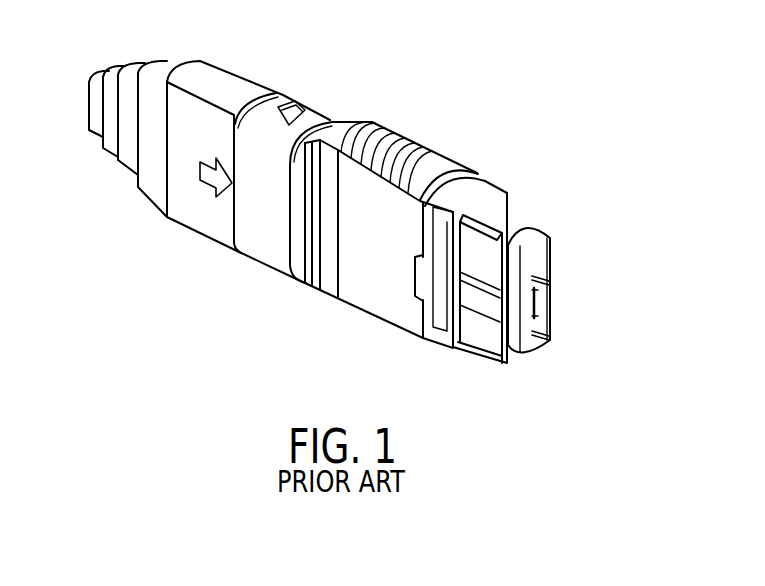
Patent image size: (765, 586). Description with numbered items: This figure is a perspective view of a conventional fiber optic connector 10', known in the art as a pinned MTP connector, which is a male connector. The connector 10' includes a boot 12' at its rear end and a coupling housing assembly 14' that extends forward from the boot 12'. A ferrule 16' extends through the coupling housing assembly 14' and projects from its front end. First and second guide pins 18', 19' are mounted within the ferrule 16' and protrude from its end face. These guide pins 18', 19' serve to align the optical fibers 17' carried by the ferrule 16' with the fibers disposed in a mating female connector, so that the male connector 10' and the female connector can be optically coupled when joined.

The connector 10' is at (354, 211).
The boot 12' is at (209, 144).
The coupling housing assembly 14' is at (398, 253).
The ferrule 16' is at (513, 278).
The optical fibers 17' is at (506, 350).
The first guide pin 18' is at (576, 270).
The second guide pin 19' is at (576, 327).